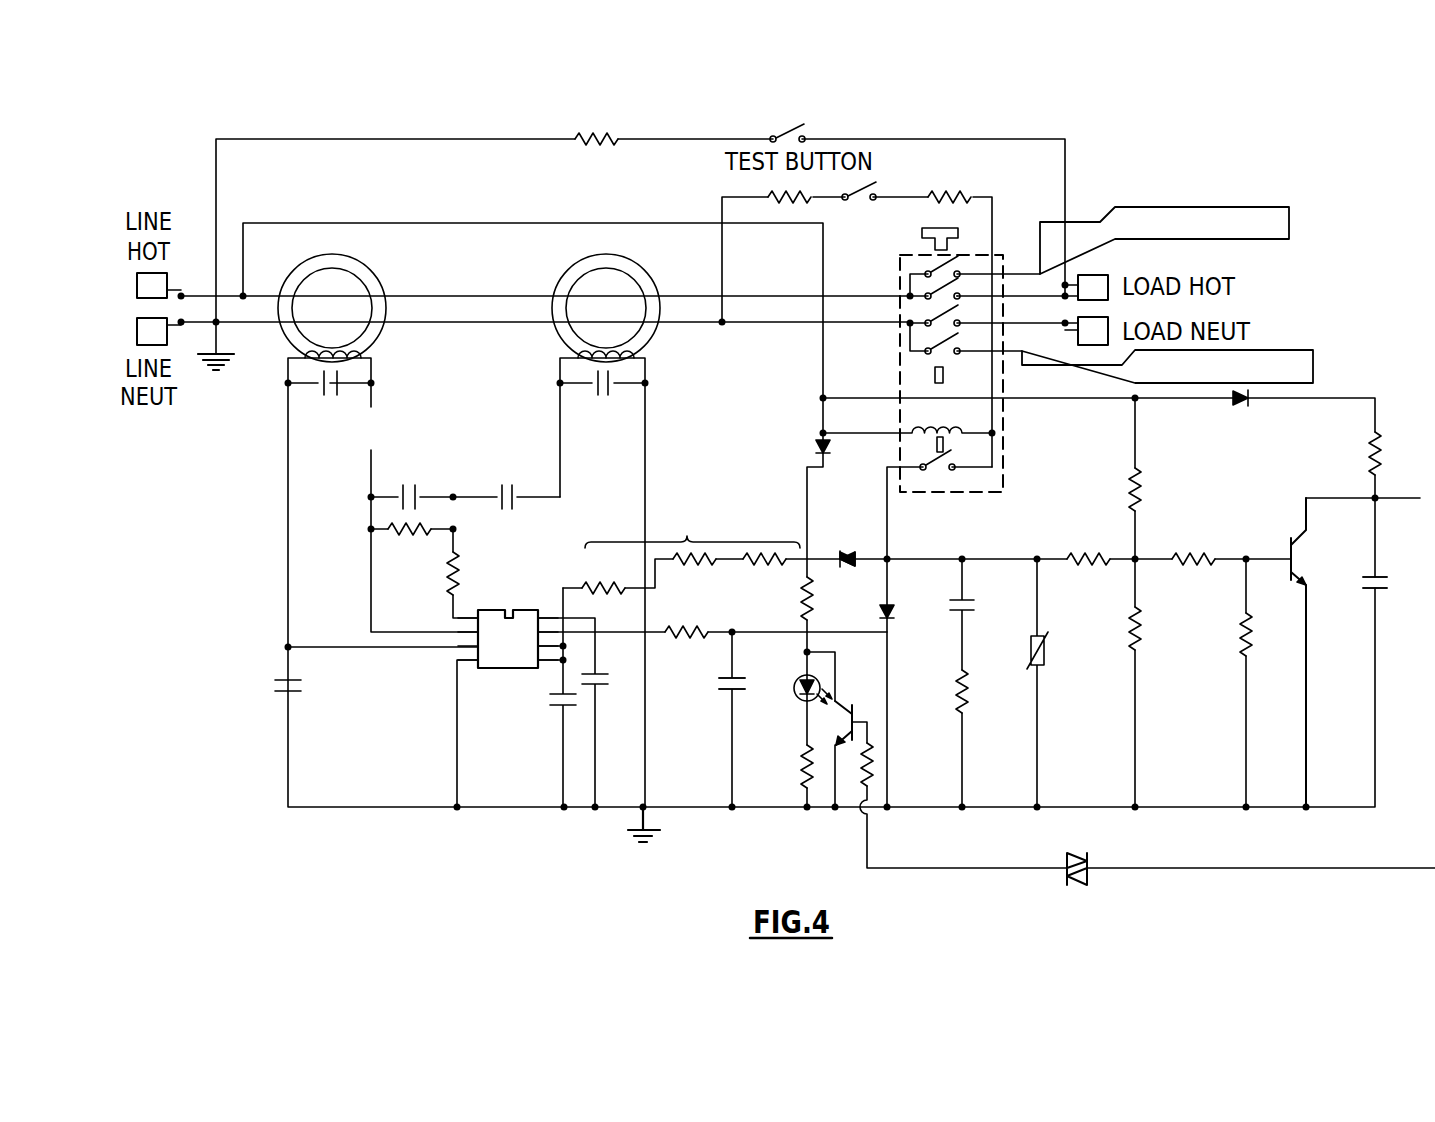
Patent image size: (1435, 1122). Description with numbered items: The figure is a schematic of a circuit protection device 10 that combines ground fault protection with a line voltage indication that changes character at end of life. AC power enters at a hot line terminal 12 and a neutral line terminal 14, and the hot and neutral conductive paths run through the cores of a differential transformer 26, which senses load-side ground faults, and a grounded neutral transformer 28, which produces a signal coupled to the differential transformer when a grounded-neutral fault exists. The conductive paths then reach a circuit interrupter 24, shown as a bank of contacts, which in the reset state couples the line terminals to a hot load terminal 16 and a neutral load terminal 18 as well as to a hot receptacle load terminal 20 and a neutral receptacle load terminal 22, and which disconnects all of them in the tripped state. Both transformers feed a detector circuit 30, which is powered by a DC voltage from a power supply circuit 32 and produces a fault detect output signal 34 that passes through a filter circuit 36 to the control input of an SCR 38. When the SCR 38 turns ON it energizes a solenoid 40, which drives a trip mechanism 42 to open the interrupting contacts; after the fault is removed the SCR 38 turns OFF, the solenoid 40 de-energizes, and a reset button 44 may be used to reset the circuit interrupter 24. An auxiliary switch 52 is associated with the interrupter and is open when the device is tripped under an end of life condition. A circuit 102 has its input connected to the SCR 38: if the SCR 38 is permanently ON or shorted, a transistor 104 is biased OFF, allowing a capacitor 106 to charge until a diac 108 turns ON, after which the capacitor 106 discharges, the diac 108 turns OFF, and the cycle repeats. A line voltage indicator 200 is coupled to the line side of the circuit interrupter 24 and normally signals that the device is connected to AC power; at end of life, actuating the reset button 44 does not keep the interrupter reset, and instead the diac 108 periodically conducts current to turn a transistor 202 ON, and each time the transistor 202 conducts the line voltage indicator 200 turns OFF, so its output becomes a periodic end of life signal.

The protective device 10 is at (650, 75).
The hot line terminal 12 is at (137, 290).
The neutral line terminal 14 is at (137, 328).
The hot load terminal 16 is at (1089, 275).
The neutral load terminal 18 is at (1078, 345).
The hot receptacle load terminal 20 is at (1245, 207).
The neutral receptacle load terminal 22 is at (1291, 350).
The circuit interrupter 24 is at (900, 275).
The differential transformer 26 is at (380, 281).
The grounded neutral transformer 28 is at (654, 281).
The detector circuit 30 is at (497, 610).
The power supply circuit 32 is at (690, 520).
The fault detect output signal 34 is at (556, 593).
The filter circuit 36 is at (710, 672).
The SCR 38 is at (890, 606).
The solenoid 40 is at (960, 428).
The trip mechanism 42 is at (935, 378).
The reset button 44 is at (922, 233).
The auxiliary switch 52 is at (940, 472).
The circuit 102 is at (1093, 522).
The transistor 104 is at (1294, 530).
The capacitor 106 is at (1370, 572).
The diac 108 is at (1090, 872).
The line voltage indicator 200 is at (800, 700).
The transistor 202 is at (855, 707).